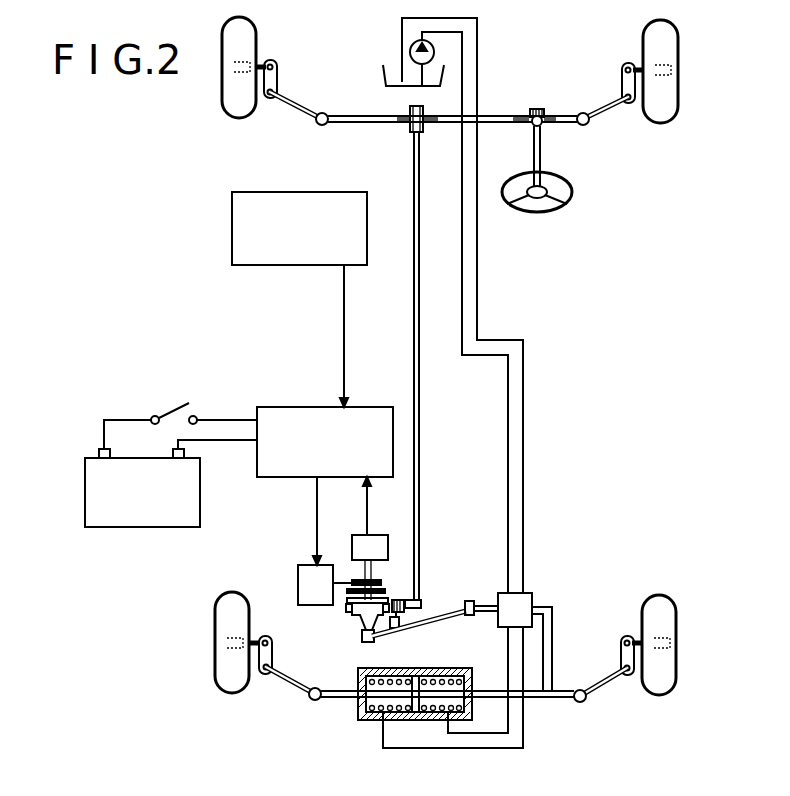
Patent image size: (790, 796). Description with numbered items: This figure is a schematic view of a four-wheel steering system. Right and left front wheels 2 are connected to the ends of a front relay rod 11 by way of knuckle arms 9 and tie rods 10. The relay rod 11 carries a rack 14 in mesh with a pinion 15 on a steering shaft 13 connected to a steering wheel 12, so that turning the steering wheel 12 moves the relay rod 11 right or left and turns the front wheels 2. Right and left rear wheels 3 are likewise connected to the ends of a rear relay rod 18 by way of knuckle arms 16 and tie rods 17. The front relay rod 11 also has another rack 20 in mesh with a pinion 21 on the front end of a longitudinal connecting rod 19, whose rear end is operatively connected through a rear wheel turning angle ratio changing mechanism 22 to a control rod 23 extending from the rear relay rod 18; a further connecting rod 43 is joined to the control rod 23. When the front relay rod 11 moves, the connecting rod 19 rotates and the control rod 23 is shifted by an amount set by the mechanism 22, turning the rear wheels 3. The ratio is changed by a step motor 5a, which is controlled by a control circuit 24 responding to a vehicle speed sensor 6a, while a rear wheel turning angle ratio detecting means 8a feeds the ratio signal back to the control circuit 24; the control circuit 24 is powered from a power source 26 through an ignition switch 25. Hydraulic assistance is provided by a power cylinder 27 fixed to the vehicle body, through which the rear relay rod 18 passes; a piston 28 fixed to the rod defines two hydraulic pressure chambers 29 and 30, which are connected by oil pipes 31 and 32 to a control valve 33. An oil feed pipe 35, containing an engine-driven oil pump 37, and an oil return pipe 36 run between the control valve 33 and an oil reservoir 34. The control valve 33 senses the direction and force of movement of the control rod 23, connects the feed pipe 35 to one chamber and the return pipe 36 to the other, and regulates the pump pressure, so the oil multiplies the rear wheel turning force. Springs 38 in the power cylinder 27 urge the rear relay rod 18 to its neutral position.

The front wheels 2 is at (222, 100).
The rear wheels 3 is at (215, 690).
The step motor 5a is at (298, 585).
The vehicle speed sensor 6a is at (232, 220).
The rear wheel turning angle ratio detecting means 8a is at (352, 547).
The knuckle arms 9 is at (268, 62).
The tie rods 10 is at (296, 101).
The relay rod 11 is at (351, 112).
The steering wheel 12 is at (574, 192).
The steering shaft 13 is at (541, 158).
The rack 14 is at (554, 110).
The pinion 15 is at (532, 106).
The knuckle arms 16 is at (263, 639).
The tie rods 17 is at (290, 684).
The relay rod 18 is at (324, 700).
The connecting rod 19 is at (421, 324).
The rack 20 is at (402, 132).
The pinion 21 is at (408, 108).
The rear wheel turning angle ratio changing mechanism 22 is at (350, 612).
The control rod 23 is at (485, 603).
The control circuit 24 is at (300, 405).
The ignition switch 25 is at (172, 401).
The power source 26 is at (162, 528).
The power cylinder 27 is at (410, 668).
The piston 28 is at (422, 676).
The hydraulic pressure chamber 29 is at (375, 706).
The hydraulic pressure chamber 30 is at (464, 688).
The oil pipe 31 is at (443, 748).
The oil pipe 32 is at (497, 748).
The control valve 33 is at (536, 596).
The oil reservoir 34 is at (381, 72).
The oil feed pipe 35 is at (506, 478).
The oil return pipe 36 is at (525, 482).
The oil pump 37 is at (401, 50).
The springs 38 is at (357, 690).
The connecting rod 43 is at (437, 616).